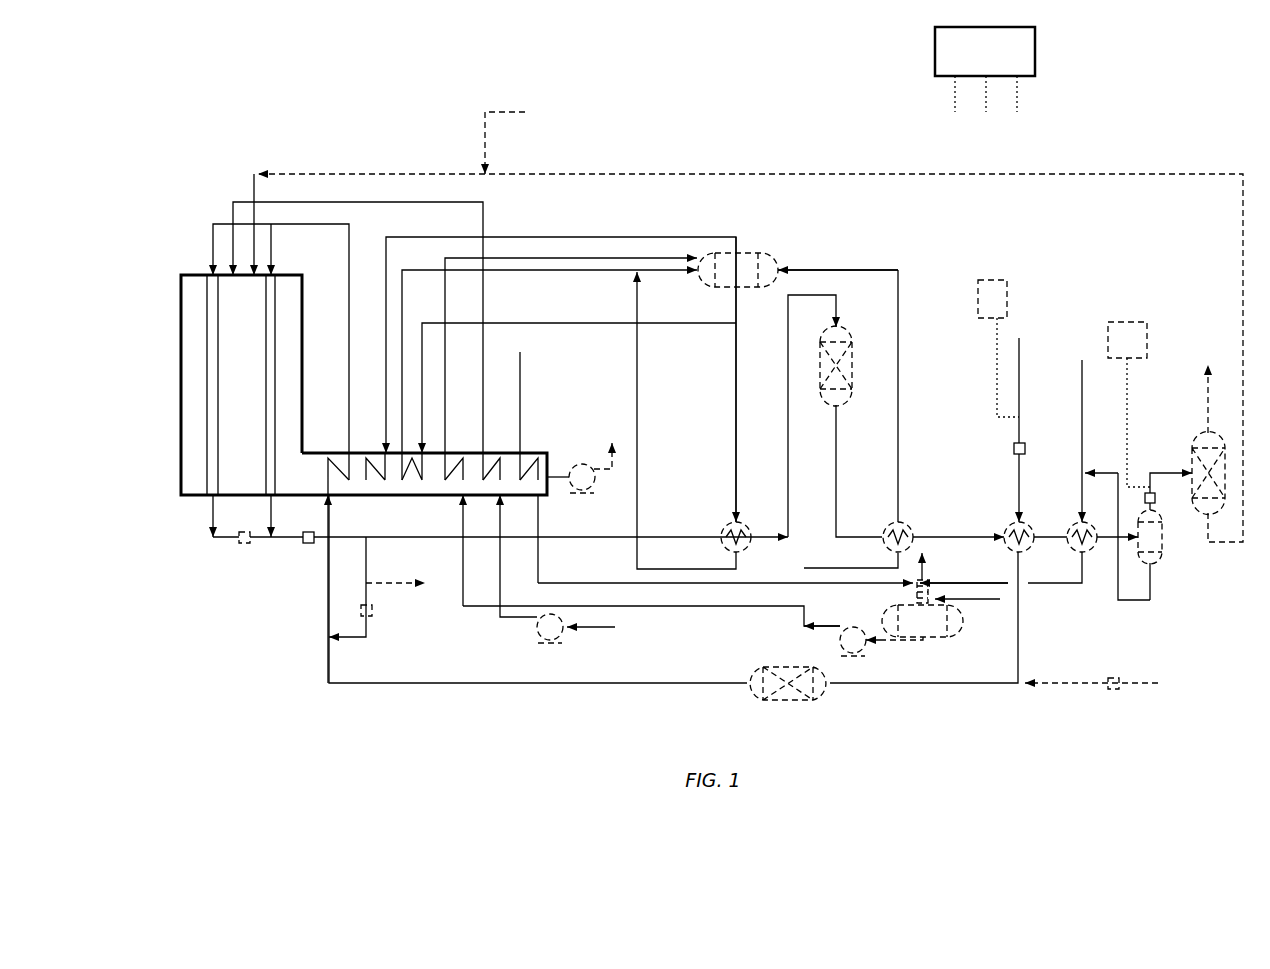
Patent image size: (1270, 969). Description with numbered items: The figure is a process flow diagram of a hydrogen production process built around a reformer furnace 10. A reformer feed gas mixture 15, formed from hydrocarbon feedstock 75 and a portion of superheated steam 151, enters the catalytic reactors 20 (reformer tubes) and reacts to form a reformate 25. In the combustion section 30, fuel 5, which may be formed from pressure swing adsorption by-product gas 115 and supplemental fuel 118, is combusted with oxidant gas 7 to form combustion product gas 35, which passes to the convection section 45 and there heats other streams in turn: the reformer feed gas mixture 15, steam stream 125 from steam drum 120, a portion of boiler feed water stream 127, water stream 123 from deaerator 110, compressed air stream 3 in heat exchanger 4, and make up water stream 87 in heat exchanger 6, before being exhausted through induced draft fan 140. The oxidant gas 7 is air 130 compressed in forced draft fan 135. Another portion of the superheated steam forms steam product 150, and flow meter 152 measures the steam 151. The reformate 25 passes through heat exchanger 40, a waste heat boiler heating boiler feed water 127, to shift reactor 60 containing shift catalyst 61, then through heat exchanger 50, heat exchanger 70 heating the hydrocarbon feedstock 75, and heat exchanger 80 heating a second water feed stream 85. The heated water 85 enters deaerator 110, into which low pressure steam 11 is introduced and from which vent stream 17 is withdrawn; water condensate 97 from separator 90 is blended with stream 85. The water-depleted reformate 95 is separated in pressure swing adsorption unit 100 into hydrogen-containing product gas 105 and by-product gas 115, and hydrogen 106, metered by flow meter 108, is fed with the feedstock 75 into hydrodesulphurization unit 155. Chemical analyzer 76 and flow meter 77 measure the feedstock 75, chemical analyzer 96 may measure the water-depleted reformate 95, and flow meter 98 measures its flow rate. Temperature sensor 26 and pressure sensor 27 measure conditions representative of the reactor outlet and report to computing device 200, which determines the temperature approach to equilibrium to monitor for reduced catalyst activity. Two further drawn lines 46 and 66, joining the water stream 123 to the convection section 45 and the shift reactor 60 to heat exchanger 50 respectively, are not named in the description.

The computing device 200 is at (985, 69).
The supplemental fuel 118 is at (497, 112).
The by-product gas 115 is at (1243, 322).
The fuel 5 is at (254, 185).
The reformer furnace 10 is at (181, 330).
The catalytic reactors 20 is at (207, 378).
The combustion section 30 is at (236, 415).
The combustion product gas 35 is at (304, 472).
The reformer feed gas mixture 15 is at (315, 224).
The oxidant gas 7 is at (486, 213).
The steam stream 125 is at (585, 237).
The boiler feed water stream 127 is at (736, 312).
The steam drum 120 is at (770, 250).
The convection section 45 is at (398, 495).
The inlet line 46 is at (463, 452).
The heat exchanger 4 is at (500, 452).
The compressed air stream 3 is at (500, 572).
The heat exchanger 6 is at (537, 452).
The make up water stream 87 is at (520, 395).
The induced draft fan 140 is at (566, 465).
The reformate 25 is at (565, 537).
The pressure sensor 27 is at (240, 545).
The temperature sensor 26 is at (303, 545).
The steam product 150 is at (392, 583).
The flow meter 152 is at (373, 609).
The steam 151 is at (348, 637).
The chemical analyzer 76 is at (455, 683).
The hydrodesulphurization unit 155 is at (800, 700).
The forced draft fan 135 is at (533, 635).
The air 130 is at (585, 627).
The water stream 123 is at (690, 606).
The heat exchanger 40 is at (727, 527).
The shift reactor 60 is at (850, 330).
The shift catalyst 61 is at (846, 370).
The outlet line 66 is at (836, 472).
The heat exchanger 50 is at (888, 526).
The vent stream 17 is at (934, 574).
The low pressure steam 11 is at (972, 602).
The deaerator 110 is at (922, 621).
The heat exchanger 70 is at (1010, 526).
The hydrocarbon feedstock 75 is at (1019, 392).
The flow meter 77 is at (1025, 443).
The heat exchanger 80 is at (1073, 526).
The second water feed stream 85 is at (1082, 428).
The chemical analyzer 96 is at (1125, 322).
The separator 90 is at (1163, 545).
The water condensate 97 is at (1150, 600).
The flow meter 98 is at (1156, 500).
The water-depleted reformate 95 is at (1176, 473).
The pressure swing adsorption unit 100 is at (1195, 438).
The hydrogen-containing product gas 105 is at (1200, 405).
The flow meter 108 is at (1112, 678).
The hydrogen 106 is at (1068, 683).